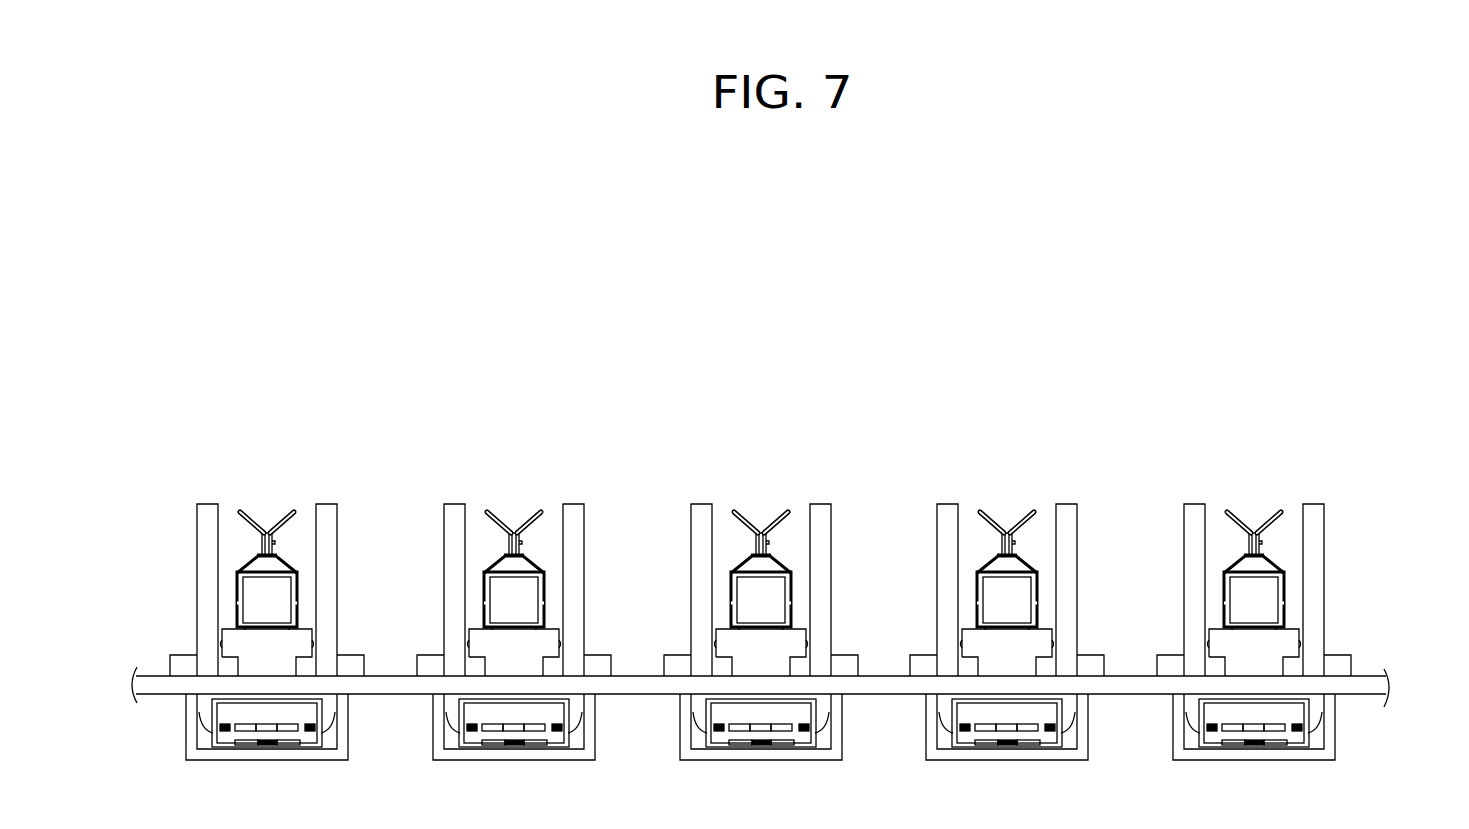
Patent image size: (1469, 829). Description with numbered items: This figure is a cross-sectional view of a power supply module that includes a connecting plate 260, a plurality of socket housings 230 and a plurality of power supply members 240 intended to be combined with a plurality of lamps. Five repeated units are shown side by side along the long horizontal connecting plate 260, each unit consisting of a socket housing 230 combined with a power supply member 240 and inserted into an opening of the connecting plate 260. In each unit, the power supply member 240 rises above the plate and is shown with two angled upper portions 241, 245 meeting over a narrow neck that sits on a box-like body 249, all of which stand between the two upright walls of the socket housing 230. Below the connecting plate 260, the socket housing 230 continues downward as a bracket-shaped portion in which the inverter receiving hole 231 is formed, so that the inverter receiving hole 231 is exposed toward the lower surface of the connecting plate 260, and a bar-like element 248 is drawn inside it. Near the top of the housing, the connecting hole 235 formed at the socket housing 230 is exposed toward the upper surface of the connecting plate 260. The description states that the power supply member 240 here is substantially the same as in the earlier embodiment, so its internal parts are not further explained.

The socket housing 230 is at (1039, 571).
The inverter receiving hole 231 is at (988, 754).
The connecting hole 235 is at (1050, 474).
The power supply member 240 is at (1011, 461).
The first gripper arm 241 is at (1034, 471).
The second gripper arm 245 is at (983, 471).
The drive unit 248 is at (1007, 769).
The container 249 is at (932, 535).
The connecting plate 260 is at (1390, 690).